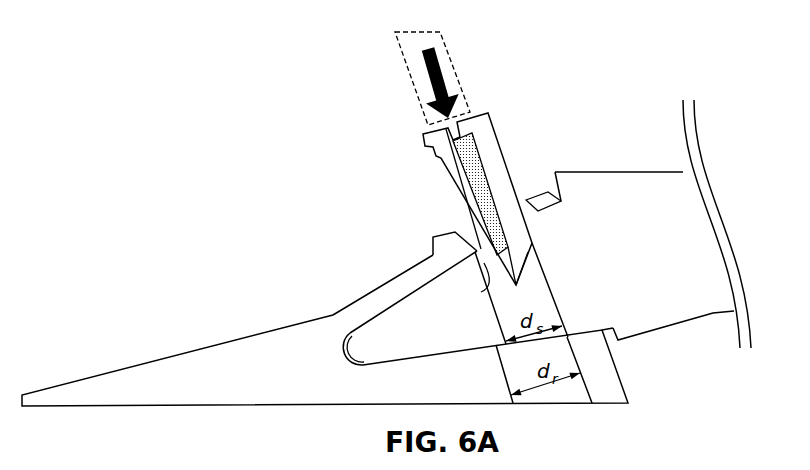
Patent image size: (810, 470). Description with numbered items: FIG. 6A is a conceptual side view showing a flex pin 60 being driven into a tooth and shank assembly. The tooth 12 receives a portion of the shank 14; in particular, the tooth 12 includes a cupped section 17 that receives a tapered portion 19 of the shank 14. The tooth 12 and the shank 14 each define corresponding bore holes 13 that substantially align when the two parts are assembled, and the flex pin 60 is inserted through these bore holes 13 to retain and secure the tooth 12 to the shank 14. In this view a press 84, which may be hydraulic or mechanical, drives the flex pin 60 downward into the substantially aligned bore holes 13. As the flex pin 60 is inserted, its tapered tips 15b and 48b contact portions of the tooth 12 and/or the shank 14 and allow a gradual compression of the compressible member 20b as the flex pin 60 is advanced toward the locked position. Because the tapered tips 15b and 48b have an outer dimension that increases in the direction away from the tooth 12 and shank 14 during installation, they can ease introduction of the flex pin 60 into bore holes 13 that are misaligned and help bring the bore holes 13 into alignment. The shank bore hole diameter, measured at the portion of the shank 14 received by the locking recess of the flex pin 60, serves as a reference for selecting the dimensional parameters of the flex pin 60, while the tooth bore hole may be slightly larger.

The tooth 12 is at (271, 387).
The shank 14 is at (392, 356).
The cupped section 17 is at (338, 331).
The tapered portion 19 is at (399, 309).
The flex pin 60 is at (504, 116).
The compressible member 20b is at (478, 182).
The press 84 is at (443, 52).
The bore holes 13 is at (535, 287).
The tapered tip 48b is at (527, 265).
The tapered tip 15b is at (481, 292).